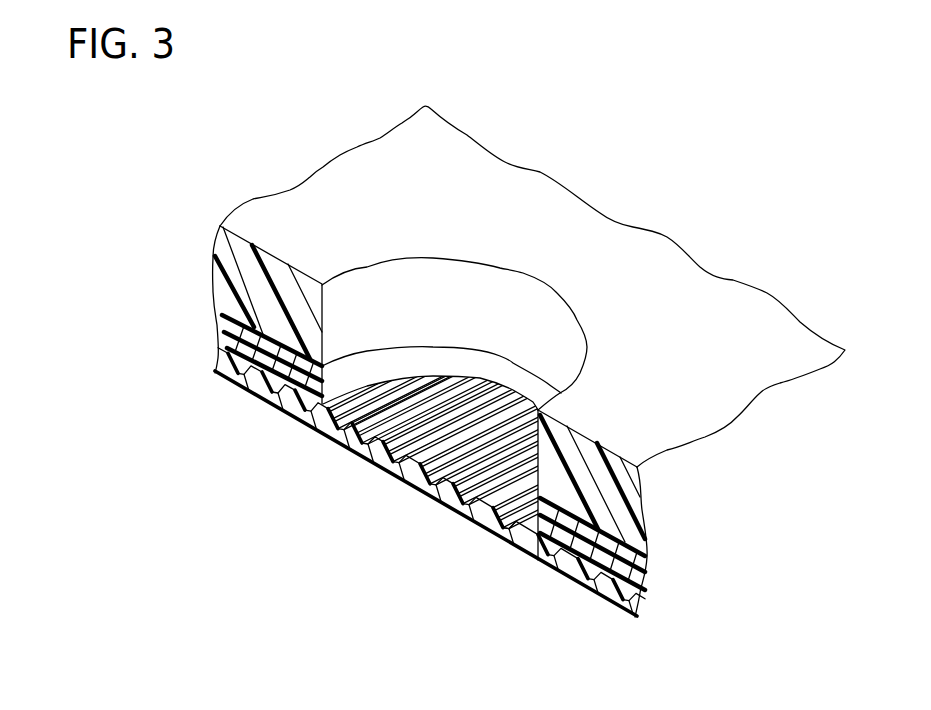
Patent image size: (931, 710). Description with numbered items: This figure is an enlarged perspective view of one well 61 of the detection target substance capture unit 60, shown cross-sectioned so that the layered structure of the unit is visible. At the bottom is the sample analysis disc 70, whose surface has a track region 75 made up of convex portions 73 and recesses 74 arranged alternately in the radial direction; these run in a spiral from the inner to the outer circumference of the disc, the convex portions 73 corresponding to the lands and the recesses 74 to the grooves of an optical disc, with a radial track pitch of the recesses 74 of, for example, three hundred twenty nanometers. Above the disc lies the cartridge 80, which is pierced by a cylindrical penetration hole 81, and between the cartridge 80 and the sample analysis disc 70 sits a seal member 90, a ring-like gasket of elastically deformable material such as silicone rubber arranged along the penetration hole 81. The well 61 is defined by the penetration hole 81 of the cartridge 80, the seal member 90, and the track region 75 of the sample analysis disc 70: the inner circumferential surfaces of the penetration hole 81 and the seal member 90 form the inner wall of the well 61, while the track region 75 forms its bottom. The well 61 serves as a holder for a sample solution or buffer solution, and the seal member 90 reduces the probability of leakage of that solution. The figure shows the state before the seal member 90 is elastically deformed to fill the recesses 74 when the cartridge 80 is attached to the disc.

The detection target substance capture unit 60 is at (310, 150).
The well 61 is at (560, 343).
The sample analysis disc 70 is at (218, 372).
The convex portion 73 is at (353, 445).
The recess 74 is at (330, 440).
The track region 75 is at (500, 530).
The cartridge 80 is at (232, 295).
The penetration hole 81 is at (537, 315).
The seal member 90 is at (227, 340).